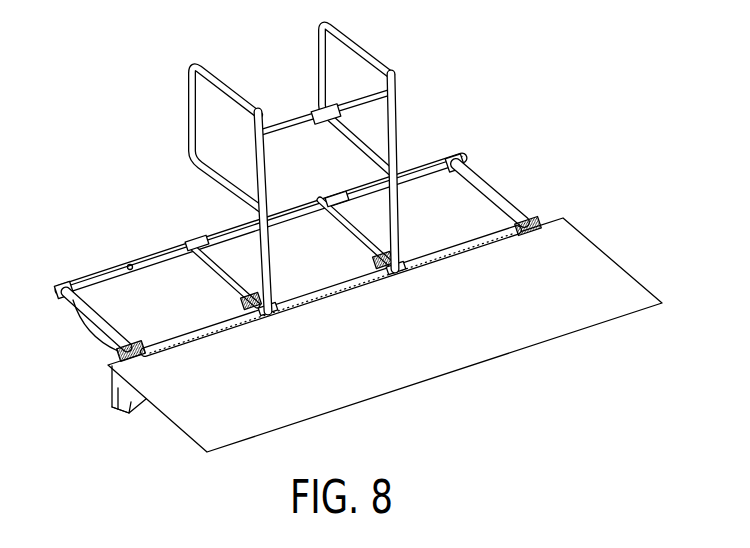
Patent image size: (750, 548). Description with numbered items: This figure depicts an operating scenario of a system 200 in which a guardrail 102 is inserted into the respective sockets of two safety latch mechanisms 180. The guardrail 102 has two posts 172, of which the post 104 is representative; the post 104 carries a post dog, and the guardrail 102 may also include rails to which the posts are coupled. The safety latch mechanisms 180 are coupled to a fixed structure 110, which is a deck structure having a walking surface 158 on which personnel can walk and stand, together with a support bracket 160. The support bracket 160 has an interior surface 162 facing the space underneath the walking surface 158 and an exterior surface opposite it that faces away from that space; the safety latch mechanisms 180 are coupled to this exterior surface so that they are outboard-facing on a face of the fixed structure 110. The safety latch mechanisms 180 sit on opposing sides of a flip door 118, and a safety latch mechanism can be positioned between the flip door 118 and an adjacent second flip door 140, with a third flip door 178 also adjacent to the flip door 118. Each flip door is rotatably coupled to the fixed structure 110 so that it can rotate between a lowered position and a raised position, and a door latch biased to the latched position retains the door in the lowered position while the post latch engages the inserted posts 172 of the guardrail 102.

The system 200 is at (95, 92).
The guardrail 102 is at (425, 105).
The post 104 is at (262, 250).
The fixed structure 110 is at (645, 235).
The flip door 118 is at (220, 245).
The second flip door 140 is at (112, 283).
The walking surface 158 is at (525, 322).
The support bracket 160 is at (108, 395).
The interior surface 162 is at (125, 411).
The posts 172 is at (302, 290).
The third flip door 178 is at (442, 198).
The safety latch mechanisms 180 is at (270, 312).